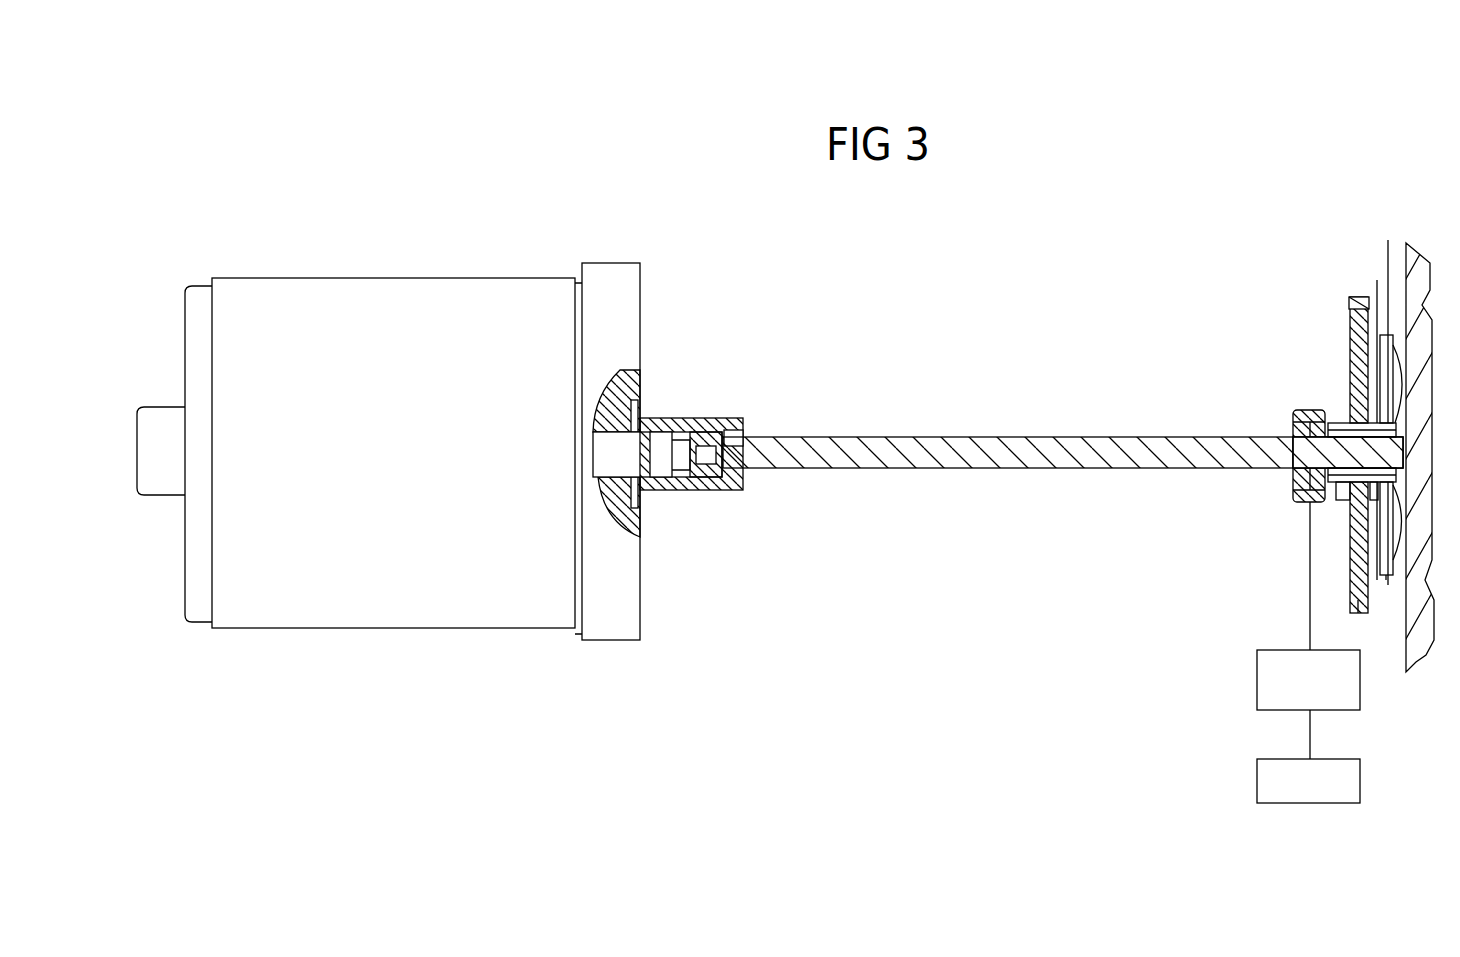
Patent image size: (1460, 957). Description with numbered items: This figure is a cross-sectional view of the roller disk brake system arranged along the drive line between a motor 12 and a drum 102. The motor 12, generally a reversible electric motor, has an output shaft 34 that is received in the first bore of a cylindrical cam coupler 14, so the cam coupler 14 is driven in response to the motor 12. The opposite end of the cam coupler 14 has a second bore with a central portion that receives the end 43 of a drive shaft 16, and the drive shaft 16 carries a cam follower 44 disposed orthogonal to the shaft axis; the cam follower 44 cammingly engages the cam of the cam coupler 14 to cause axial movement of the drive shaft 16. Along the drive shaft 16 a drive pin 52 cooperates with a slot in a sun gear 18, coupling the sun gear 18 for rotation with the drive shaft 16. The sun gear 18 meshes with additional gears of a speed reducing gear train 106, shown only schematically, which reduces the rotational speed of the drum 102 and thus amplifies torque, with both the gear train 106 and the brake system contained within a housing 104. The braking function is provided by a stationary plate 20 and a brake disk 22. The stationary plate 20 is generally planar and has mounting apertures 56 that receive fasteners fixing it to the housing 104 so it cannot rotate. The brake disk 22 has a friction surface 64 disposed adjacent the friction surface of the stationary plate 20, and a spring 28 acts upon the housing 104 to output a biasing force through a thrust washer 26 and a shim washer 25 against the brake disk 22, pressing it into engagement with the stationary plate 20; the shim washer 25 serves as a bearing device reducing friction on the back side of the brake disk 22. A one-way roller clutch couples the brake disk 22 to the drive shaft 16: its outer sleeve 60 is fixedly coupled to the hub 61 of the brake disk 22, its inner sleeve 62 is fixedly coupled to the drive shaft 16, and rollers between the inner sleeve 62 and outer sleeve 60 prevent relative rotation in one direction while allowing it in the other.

The motor 12 is at (367, 278).
The output shaft 34 is at (648, 443).
The cam coupler 14 is at (665, 445).
The end of drive shaft 43 is at (705, 470).
The cam follower 44 is at (736, 442).
The drive shaft 16 is at (972, 437).
The sun gear 18 is at (1292, 412).
The drive pin 52 is at (1293, 445).
The hub 61 is at (1340, 423).
The outer sleeve 60 is at (1354, 498).
The inner sleeve 62 is at (1331, 520).
The friction surface 64 is at (1345, 534).
The stationary plate 20 is at (1360, 297).
The mounting apertures 56 is at (1352, 305).
The brake disk 22 is at (1388, 262).
The thrust washer 26 is at (1355, 423).
The shim washer 25 is at (1350, 600).
The spring 28 is at (1392, 595).
The housing 104 is at (1410, 672).
The gear train 106 is at (1257, 690).
The drum 102 is at (1257, 783).